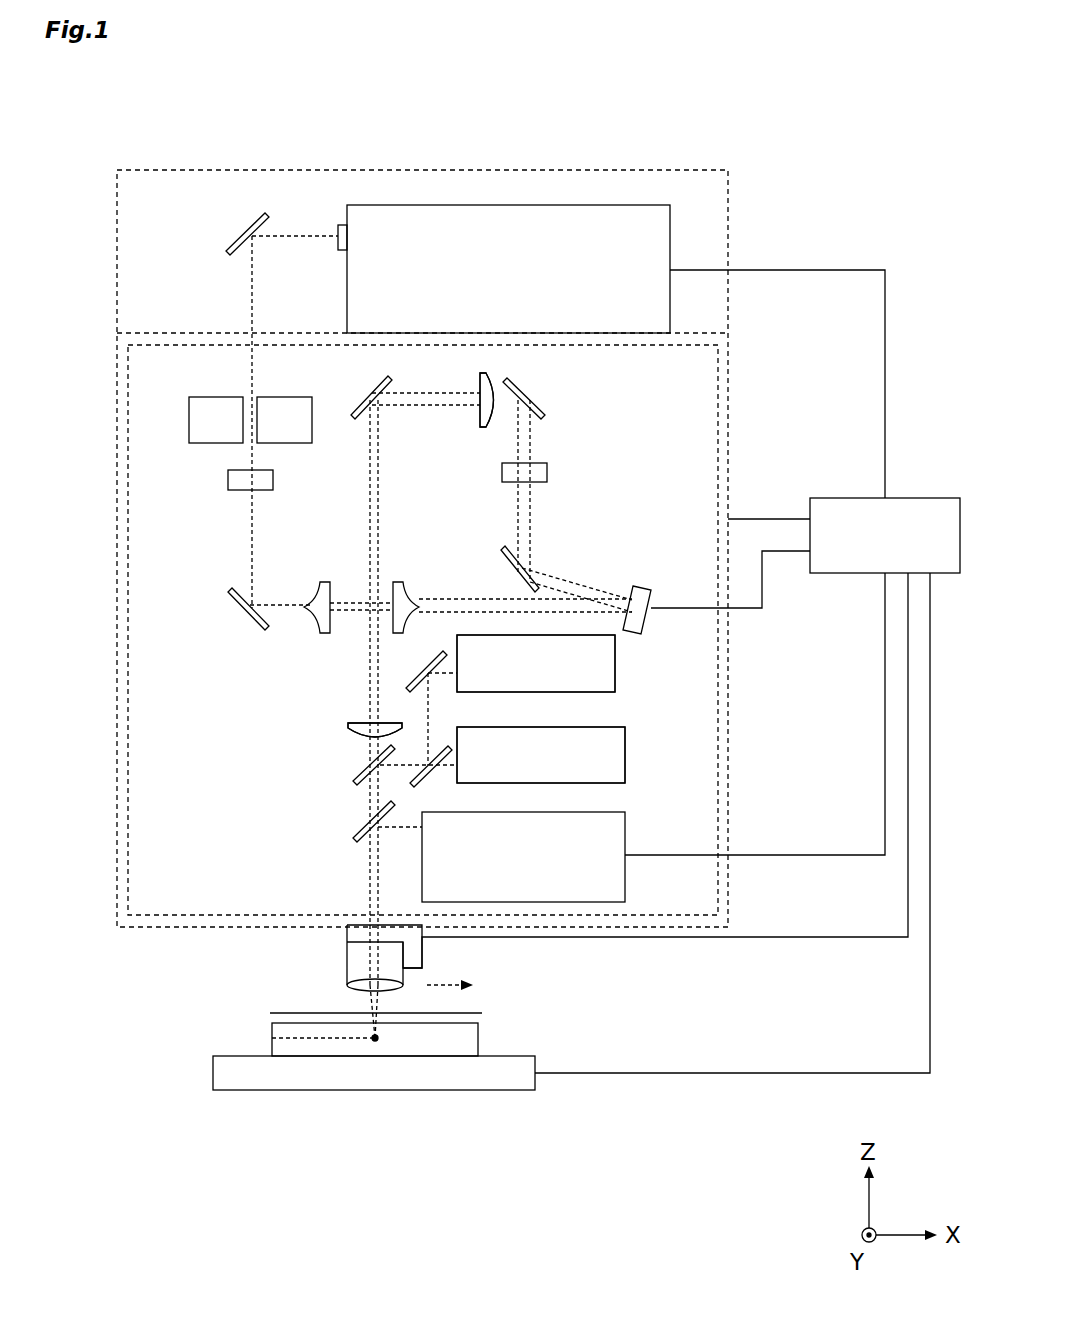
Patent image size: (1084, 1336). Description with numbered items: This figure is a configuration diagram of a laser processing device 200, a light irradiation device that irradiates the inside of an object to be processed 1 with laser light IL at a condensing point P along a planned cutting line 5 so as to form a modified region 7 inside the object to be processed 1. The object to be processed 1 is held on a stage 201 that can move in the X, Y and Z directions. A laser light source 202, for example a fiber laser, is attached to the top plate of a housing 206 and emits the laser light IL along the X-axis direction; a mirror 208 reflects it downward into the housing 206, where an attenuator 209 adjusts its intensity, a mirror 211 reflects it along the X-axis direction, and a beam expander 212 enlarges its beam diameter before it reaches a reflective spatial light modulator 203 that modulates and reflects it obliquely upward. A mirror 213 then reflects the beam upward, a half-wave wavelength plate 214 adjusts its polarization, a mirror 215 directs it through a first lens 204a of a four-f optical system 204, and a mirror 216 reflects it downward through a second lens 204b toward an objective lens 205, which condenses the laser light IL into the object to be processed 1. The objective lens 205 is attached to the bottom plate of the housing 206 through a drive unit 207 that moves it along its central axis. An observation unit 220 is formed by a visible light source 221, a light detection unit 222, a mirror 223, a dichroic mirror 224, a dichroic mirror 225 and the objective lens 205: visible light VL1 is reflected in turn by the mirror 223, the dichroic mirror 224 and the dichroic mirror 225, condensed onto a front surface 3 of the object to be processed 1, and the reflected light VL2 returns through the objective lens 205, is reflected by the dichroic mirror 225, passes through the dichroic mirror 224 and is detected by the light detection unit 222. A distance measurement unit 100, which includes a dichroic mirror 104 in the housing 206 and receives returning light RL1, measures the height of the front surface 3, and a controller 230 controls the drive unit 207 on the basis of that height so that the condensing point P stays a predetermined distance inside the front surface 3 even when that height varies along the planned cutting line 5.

The laser processing device 200 is at (723, 112).
The housing 206 is at (118, 352).
The laser light source 202 is at (670, 222).
The mirror 208 is at (255, 228).
The laser light IL is at (250, 285).
The mirror 216 is at (372, 385).
The first lens 204a is at (493, 362).
The 4f optical system 204 is at (421, 555).
The mirror 215 is at (548, 415).
The λ/2 wavelength plate 214 is at (548, 472).
The attenuator 209 is at (208, 466).
The mirror 211 is at (255, 622).
The beam expander 212 is at (356, 624).
The mirror 213 is at (503, 560).
The reflective spatial light modulator 203 is at (641, 588).
The mirror 223 is at (420, 680).
The visible light source 221 is at (617, 665).
The visible light VL1 is at (435, 675).
The light detection unit 222 is at (627, 745).
The reflected light VL2 is at (457, 758).
The observation unit 220 is at (640, 773).
The second lens 204b is at (350, 728).
The dichroic mirror 225 is at (358, 775).
The dichroic mirror 224 is at (425, 782).
The dichroic mirror 104 is at (358, 828).
The reflected light RL1 is at (405, 827).
The distance measurement unit 100 is at (640, 873).
The objective lens 205 is at (347, 968).
The drive unit 207 is at (425, 958).
The front surface 3 is at (290, 1017).
The planned cutting line 5 is at (460, 1013).
The object to be processed 1 is at (272, 1030).
The modified region 7 is at (332, 1040).
The condensing point P is at (377, 1040).
The stage 201 is at (213, 1070).
The controller 230 is at (910, 498).